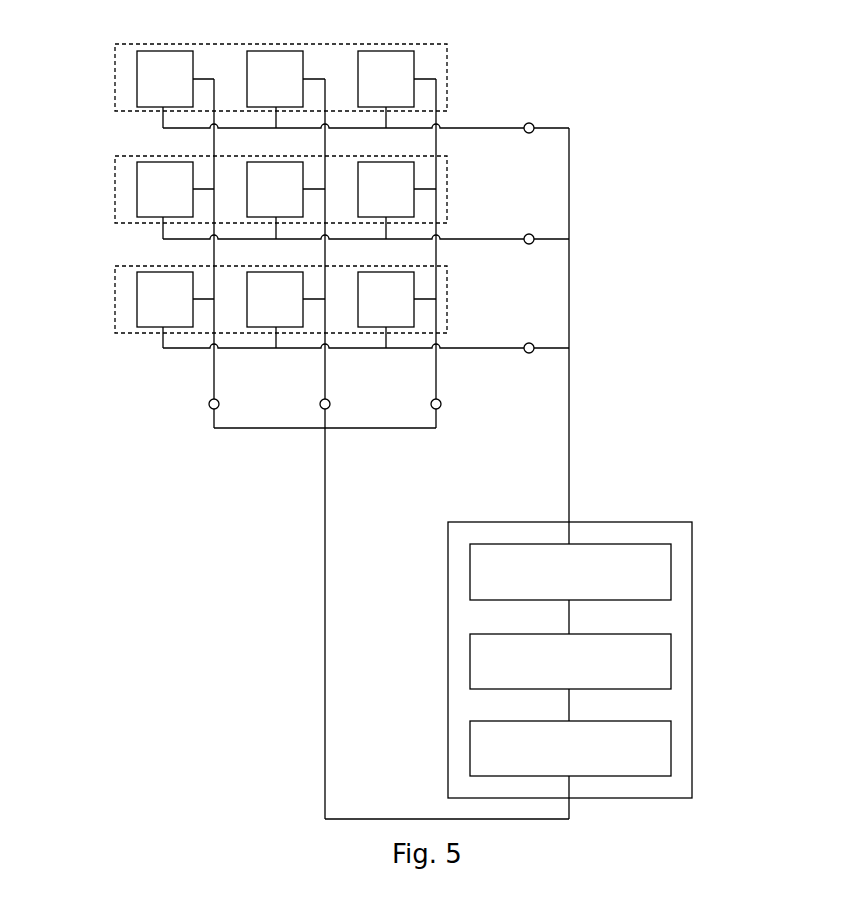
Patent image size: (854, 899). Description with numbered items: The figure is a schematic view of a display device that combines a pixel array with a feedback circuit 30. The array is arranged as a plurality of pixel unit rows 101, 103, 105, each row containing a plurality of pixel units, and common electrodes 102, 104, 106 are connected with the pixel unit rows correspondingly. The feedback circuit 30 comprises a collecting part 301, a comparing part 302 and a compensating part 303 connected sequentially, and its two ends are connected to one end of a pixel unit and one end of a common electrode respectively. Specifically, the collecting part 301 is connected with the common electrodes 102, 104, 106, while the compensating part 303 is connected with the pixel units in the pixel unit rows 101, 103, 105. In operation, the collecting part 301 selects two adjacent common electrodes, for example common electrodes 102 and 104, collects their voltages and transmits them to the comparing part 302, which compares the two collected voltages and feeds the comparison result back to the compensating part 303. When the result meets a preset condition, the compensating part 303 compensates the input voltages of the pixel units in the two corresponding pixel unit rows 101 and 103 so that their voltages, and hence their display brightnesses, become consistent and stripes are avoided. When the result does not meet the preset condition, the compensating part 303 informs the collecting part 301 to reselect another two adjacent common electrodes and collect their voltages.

The pixel unit row 101 is at (115, 72).
The pixel unit row 103 is at (115, 185).
The pixel unit row 105 is at (115, 295).
The common electrode 102 is at (529, 123).
The common electrode 104 is at (529, 234).
The common electrode 106 is at (529, 343).
The feedback circuit 30 is at (616, 522).
The collecting part 301 is at (671, 572).
The comparing part 302 is at (671, 650).
The compensating part 303 is at (671, 737).